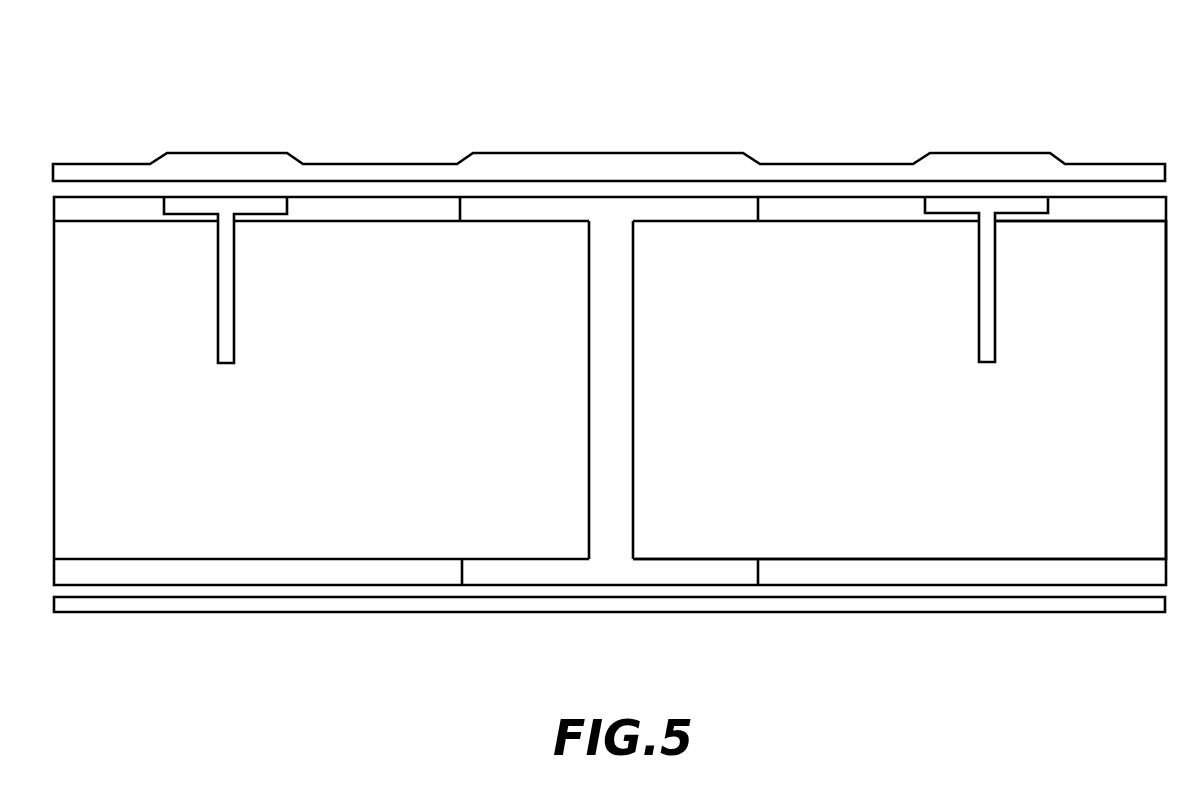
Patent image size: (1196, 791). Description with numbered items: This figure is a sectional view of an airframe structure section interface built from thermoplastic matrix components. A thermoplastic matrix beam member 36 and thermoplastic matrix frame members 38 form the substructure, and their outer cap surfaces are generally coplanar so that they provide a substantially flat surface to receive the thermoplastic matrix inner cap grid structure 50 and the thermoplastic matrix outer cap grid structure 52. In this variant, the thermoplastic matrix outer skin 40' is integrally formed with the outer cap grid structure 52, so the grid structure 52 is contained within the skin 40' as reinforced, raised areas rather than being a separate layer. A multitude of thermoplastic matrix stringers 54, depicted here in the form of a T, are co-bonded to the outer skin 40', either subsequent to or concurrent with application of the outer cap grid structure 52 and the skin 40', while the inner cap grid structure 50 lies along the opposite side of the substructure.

The thermoplastic matrix outer skin 40' is at (610, 299).
The thermoplastic matrix outer cap grid structure 52 is at (232, 162).
The thermoplastic matrix stringers 54 is at (230, 313).
The thermoplastic matrix beam members 36 is at (610, 370).
The thermoplastic matrix frame members 38 is at (1107, 472).
The thermoplastic matrix inner cap grid structure 50 is at (696, 604).